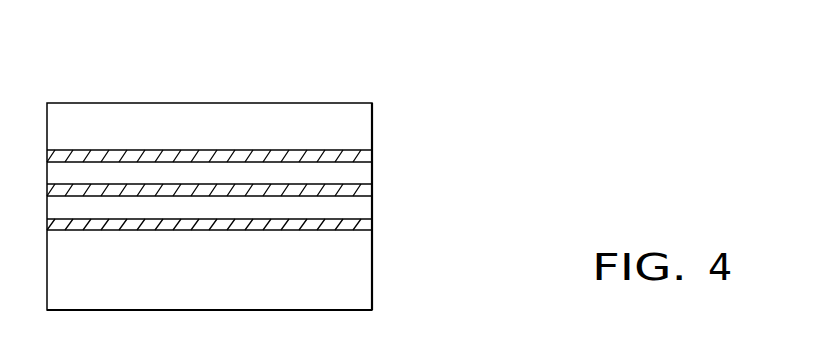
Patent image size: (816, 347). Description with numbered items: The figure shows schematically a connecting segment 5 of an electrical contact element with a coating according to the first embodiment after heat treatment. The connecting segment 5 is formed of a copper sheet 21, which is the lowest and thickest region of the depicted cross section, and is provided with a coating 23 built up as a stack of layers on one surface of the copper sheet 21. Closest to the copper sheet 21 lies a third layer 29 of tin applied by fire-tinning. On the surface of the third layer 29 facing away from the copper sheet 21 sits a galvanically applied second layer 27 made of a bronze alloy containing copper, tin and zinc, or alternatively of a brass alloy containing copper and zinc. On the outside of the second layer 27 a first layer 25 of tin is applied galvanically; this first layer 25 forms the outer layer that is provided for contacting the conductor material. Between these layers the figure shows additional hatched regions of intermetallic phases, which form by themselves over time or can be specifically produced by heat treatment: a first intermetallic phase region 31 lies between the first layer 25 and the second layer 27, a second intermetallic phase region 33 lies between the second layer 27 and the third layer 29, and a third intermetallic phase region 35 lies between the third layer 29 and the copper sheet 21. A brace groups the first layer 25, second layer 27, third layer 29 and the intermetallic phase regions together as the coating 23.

The connecting segment 5 is at (330, 202).
The copper sheet 21 is at (363, 262).
The coating 23 is at (301, 160).
The first layer 25 is at (353, 128).
The second layer 27 is at (357, 172).
The third layer 29 is at (247, 211).
The first intermetallic phase region 31 is at (357, 153).
The second intermetallic phase region 33 is at (357, 190).
The third intermetallic phase region 35 is at (365, 227).